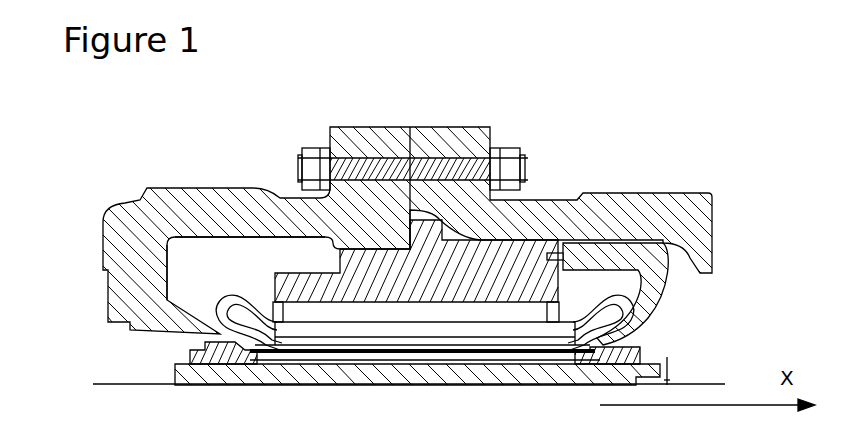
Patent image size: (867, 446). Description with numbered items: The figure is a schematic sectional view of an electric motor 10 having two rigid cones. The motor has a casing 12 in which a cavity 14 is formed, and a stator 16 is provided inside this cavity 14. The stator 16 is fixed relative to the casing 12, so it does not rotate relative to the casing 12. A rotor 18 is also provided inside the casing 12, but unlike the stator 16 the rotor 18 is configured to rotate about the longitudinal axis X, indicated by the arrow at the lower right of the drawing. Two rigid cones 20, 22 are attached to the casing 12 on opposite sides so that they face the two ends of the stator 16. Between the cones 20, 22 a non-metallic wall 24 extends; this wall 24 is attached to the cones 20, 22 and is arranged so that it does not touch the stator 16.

The electric motor 10 is at (197, 131).
The casing 12 is at (118, 222).
The cavity 14 is at (178, 273).
The stator 16 is at (303, 312).
The rotor 18 is at (453, 372).
The rigid cone 20 is at (227, 333).
The rigid cone 22 is at (633, 335).
The non-metallic wall 24 is at (478, 350).